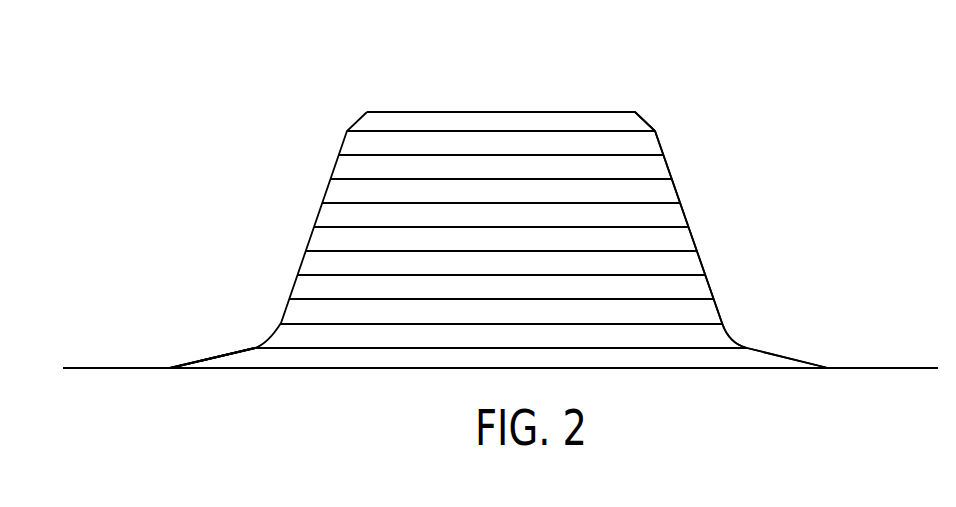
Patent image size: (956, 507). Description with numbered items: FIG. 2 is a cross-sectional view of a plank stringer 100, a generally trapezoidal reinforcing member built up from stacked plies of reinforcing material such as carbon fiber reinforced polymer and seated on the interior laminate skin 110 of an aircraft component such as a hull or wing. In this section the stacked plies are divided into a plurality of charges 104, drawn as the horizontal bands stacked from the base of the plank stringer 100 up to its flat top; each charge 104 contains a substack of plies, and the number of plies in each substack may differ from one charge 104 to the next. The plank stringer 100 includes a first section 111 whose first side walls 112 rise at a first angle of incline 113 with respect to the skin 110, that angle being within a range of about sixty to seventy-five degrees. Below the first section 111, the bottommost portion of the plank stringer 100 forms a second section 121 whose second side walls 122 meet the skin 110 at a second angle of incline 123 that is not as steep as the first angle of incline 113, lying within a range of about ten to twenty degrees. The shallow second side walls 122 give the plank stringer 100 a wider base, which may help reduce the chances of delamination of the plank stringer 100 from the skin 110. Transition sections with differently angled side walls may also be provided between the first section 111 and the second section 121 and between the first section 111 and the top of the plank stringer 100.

The plank stringer 100 is at (527, 97).
The charge 104 is at (648, 122).
The skin 110 is at (87, 368).
The first section 111 is at (262, 130).
The first side walls 112 is at (318, 208).
The first angle of incline 113 is at (321, 224).
The second section 121 is at (170, 343).
The second side walls 122 is at (225, 356).
The second angle of incline 123 is at (218, 357).